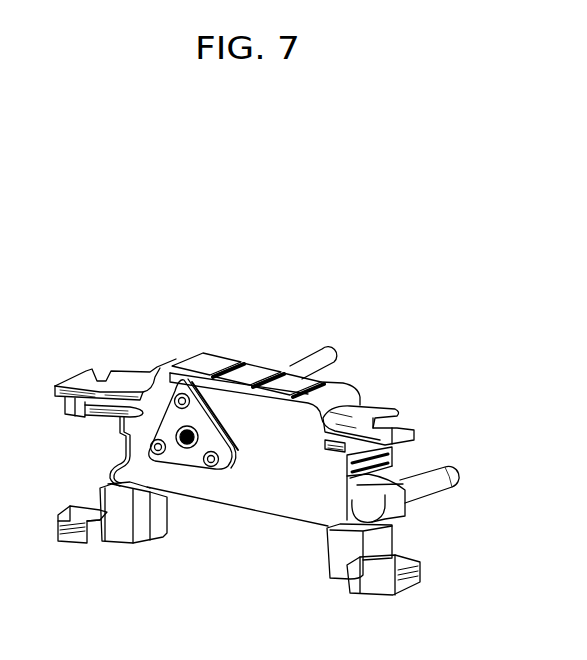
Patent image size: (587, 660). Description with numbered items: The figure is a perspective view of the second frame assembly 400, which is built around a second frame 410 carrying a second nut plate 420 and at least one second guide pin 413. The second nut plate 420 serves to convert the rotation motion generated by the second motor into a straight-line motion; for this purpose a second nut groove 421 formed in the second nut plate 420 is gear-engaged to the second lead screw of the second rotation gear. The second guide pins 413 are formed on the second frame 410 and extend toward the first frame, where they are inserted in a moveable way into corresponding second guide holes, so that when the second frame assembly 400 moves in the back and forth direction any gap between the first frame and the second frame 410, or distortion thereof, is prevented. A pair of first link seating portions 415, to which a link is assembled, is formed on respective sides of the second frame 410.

The second frame assembly 400 is at (266, 289).
The second frame 410 is at (302, 505).
The second guide pin 413 is at (332, 350).
The first link seating portion 415 is at (73, 543).
The second nut plate 420 is at (193, 472).
The second nut groove 421 is at (157, 440).